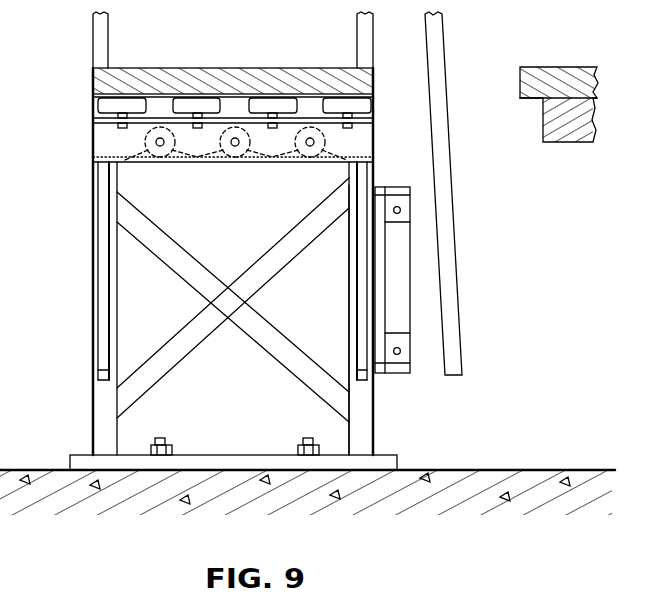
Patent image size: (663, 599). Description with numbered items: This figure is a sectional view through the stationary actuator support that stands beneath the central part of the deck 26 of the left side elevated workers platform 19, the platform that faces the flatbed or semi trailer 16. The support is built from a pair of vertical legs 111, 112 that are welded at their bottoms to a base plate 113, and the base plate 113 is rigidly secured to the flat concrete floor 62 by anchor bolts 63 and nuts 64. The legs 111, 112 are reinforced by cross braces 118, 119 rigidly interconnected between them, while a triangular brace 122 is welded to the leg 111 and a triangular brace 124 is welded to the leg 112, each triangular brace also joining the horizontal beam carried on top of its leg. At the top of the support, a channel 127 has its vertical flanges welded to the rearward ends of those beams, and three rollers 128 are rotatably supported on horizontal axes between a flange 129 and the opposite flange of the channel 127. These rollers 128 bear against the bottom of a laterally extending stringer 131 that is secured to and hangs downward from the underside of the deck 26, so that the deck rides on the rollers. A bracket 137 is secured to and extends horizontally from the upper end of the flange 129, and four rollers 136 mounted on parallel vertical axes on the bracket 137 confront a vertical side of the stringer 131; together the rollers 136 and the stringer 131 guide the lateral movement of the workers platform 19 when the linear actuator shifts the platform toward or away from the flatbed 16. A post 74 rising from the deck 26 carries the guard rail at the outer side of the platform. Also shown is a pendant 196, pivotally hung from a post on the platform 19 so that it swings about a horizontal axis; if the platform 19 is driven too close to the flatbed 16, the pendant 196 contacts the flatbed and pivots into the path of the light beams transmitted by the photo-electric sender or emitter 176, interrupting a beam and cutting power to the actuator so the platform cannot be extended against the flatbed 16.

The post 74 is at (93, 50).
The deck 26 is at (145, 68).
The stringer 131 is at (160, 107).
The rollers 136 is at (333, 100).
The left side elongated elevated workers platform 19 is at (338, 68).
The bracket 137 is at (110, 122).
The channel 127 is at (100, 140).
The flange 129 is at (99, 165).
The rollers 128 is at (206, 156).
The leg 111 is at (93, 292).
The triangular brace 122 is at (104, 346).
The leg 112 is at (349, 345).
The triangular brace 124 is at (349, 248).
The cross brace 118 is at (168, 264).
The cross brace 119 is at (207, 340).
The sender or emitter 176 is at (410, 340).
The pendant 196 is at (454, 164).
The flatbed or semi trailer 16 is at (565, 67).
The anchor bolt 63 is at (161, 438).
The nut 64 is at (170, 448).
The base plate 113 is at (395, 462).
The flat concrete surface 62 is at (580, 470).